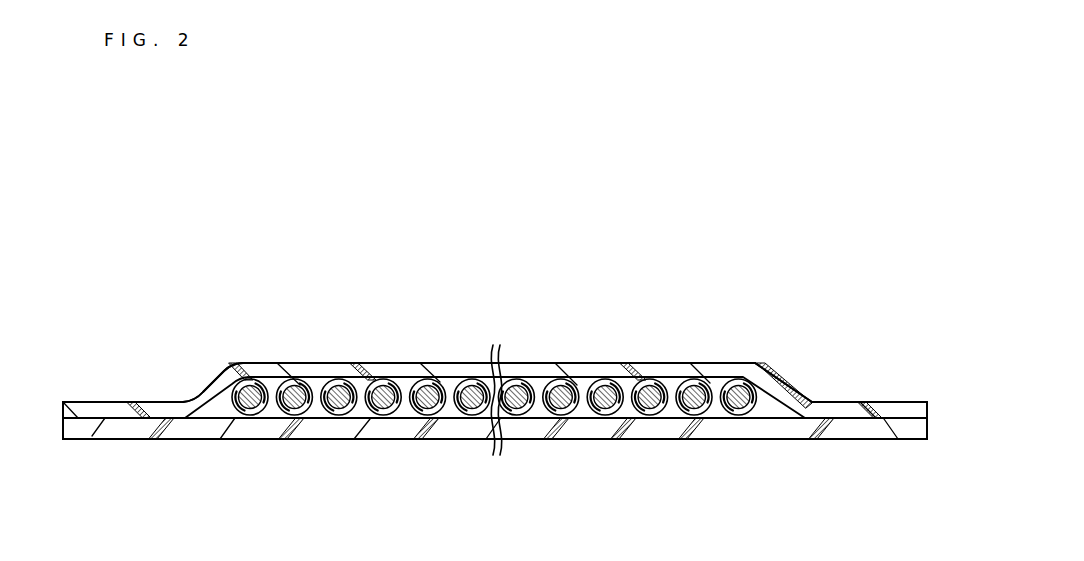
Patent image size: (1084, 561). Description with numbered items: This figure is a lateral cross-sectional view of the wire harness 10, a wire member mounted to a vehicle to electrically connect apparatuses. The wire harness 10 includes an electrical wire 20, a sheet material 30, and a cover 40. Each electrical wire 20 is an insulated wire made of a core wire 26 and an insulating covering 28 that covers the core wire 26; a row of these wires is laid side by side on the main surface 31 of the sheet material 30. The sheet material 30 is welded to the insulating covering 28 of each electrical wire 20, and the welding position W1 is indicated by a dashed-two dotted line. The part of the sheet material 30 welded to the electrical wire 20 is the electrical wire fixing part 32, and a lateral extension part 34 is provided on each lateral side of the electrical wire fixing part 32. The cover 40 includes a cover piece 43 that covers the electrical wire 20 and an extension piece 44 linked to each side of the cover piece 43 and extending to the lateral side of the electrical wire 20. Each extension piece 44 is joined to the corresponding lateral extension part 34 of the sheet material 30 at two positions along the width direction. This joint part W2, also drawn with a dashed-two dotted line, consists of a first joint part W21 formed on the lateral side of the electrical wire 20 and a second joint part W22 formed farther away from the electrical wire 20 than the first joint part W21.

The wire harness 10 is at (241, 200).
The electrical wire 20 is at (305, 313).
The core wire 26 is at (251, 385).
The insulating covering 28 is at (279, 382).
The sheet material 30 is at (770, 440).
The main surface 31 is at (233, 440).
The electrical wire fixing part 32 is at (453, 440).
The lateral extension part 34 is at (188, 440).
The cover 40 is at (823, 312).
The cover piece 43 is at (723, 363).
The extension piece 44 is at (840, 402).
The welding position W1 is at (305, 442).
The joint part W2 is at (165, 503).
The first joint part W21 is at (157, 440).
The second joint part W22 is at (103, 440).